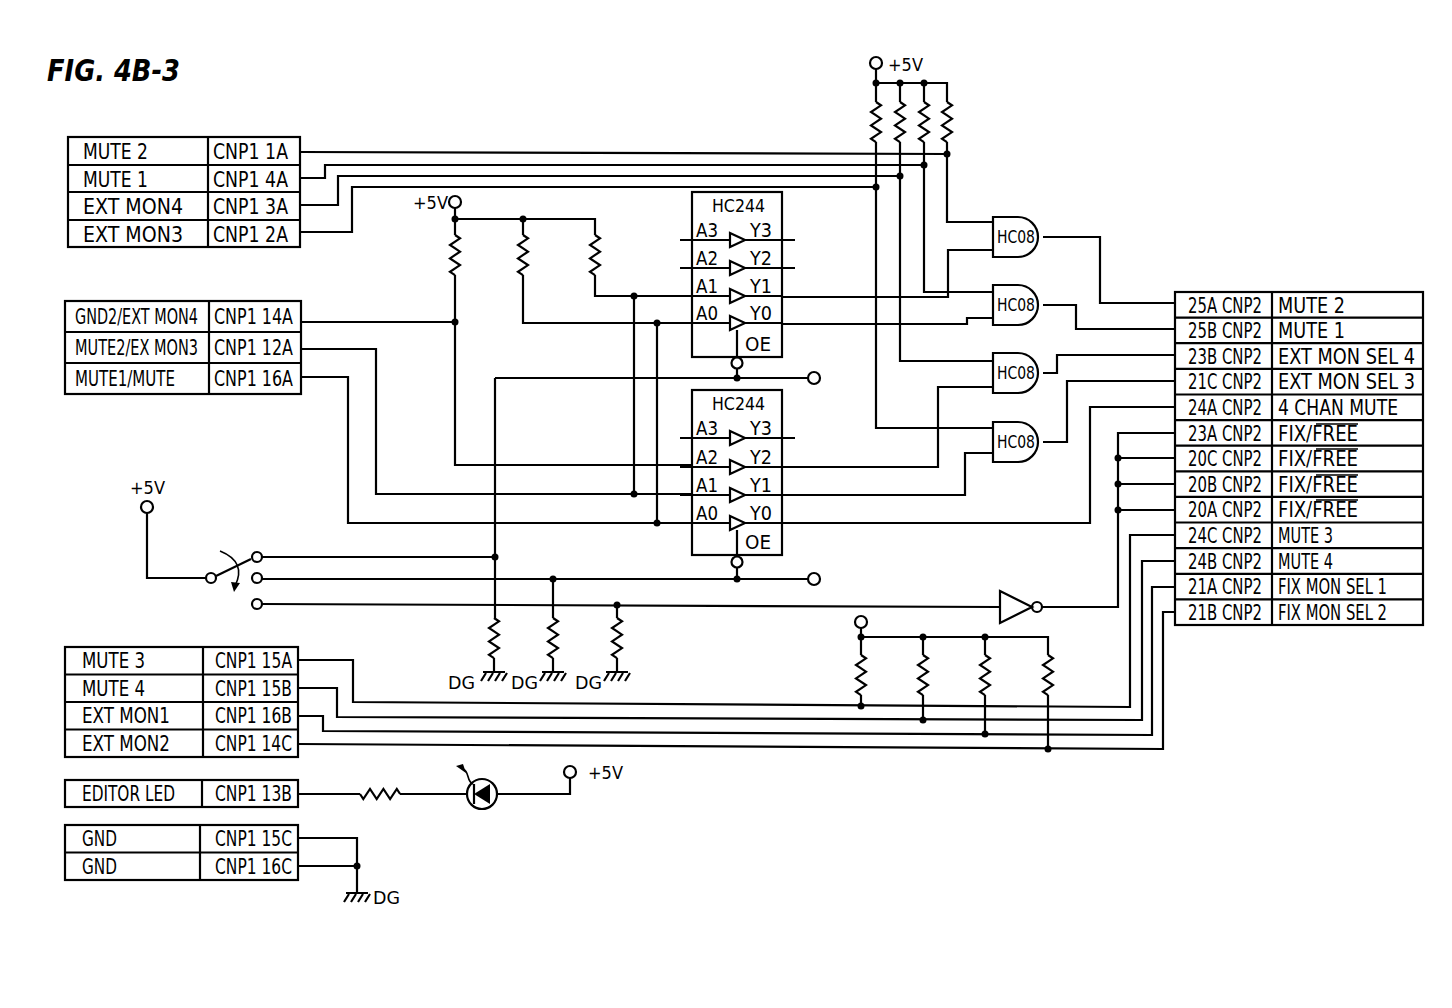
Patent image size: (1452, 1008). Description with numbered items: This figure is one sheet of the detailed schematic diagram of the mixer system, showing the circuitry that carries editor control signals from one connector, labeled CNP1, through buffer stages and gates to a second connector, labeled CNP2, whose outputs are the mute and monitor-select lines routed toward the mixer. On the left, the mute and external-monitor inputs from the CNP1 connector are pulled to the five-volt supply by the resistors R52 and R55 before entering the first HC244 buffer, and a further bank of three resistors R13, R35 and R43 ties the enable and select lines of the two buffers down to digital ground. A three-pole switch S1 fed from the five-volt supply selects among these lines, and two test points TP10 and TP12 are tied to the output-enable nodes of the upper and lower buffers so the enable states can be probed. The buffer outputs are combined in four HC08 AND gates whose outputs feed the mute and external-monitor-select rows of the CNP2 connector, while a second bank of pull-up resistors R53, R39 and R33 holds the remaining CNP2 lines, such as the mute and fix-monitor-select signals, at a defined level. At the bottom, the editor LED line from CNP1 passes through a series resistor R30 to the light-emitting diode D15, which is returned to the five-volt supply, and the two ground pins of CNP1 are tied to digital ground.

The pull-up resistor 10K R52 is at (541, 257).
The pull-up resistor 10K R55 is at (611, 257).
The pull-down resistor 10K R13 is at (507, 649).
The pull-down resistor 10K R35 is at (566, 649).
The pull-down resistor 10K R43 is at (630, 649).
The pull-up resistor 10K R53 is at (941, 678).
The pull-up resistor 10K R39 is at (1003, 678).
The pull-up resistor 10K R33 is at (1066, 678).
The LED series resistor R30 is at (380, 809).
The editor LED D15 is at (477, 798).
The 3P2T switch S1 is at (201, 555).
The test point TP10 is at (670, 393).
The test point TP12 is at (564, 580).